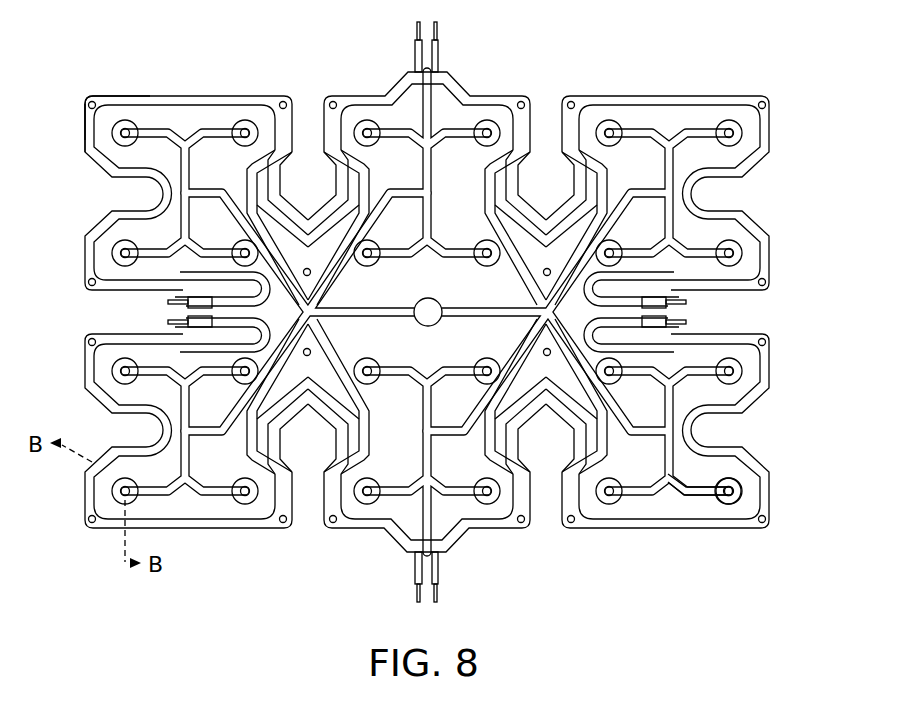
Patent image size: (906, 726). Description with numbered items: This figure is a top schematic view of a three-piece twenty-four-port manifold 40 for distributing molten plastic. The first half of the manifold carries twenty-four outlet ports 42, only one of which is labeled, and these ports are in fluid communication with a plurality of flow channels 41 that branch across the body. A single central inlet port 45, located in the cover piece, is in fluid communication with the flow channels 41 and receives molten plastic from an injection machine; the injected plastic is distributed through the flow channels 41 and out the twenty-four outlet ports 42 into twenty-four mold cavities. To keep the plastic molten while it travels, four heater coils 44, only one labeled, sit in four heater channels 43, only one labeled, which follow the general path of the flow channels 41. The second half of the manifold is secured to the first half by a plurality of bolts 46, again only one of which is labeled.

The three-piece 24-port manifold 40 is at (633, 66).
The flow channels 41 is at (682, 494).
The outlet ports 42 is at (731, 498).
The heater channels 43 is at (486, 104).
The heater coils 44 is at (438, 52).
The central inlet port 45 is at (437, 300).
The bolts 46 is at (102, 95).